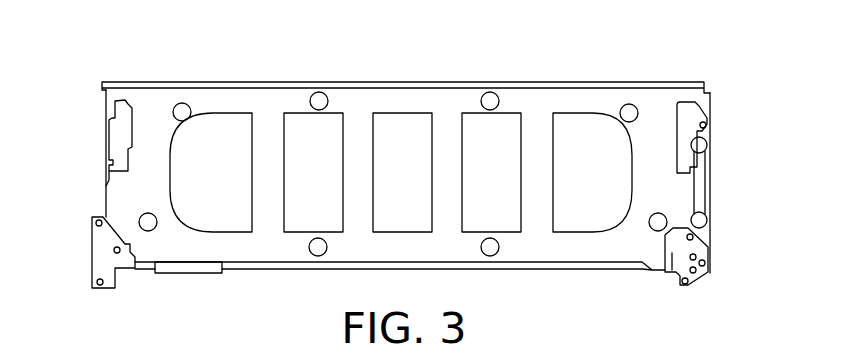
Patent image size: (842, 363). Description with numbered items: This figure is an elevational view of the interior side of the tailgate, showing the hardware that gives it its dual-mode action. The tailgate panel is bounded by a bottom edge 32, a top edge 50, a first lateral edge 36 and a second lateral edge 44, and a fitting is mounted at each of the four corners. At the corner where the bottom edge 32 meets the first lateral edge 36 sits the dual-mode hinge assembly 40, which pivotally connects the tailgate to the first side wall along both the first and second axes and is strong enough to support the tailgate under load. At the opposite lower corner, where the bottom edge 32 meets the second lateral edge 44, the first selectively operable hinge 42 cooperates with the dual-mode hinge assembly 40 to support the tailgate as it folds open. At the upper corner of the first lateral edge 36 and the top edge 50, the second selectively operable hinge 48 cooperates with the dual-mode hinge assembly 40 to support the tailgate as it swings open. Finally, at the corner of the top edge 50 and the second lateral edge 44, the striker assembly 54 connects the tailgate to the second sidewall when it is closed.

The bottom edge 32 is at (300, 270).
The first lateral edge 36 is at (710, 193).
The dual-mode hinge assembly 40 is at (708, 273).
The first selectively operable hinge 42 is at (102, 262).
The second lateral edge 44 is at (105, 194).
The second selectively operable hinge 48 is at (690, 121).
The top edge 50 is at (423, 83).
The striker assembly 54 is at (117, 125).